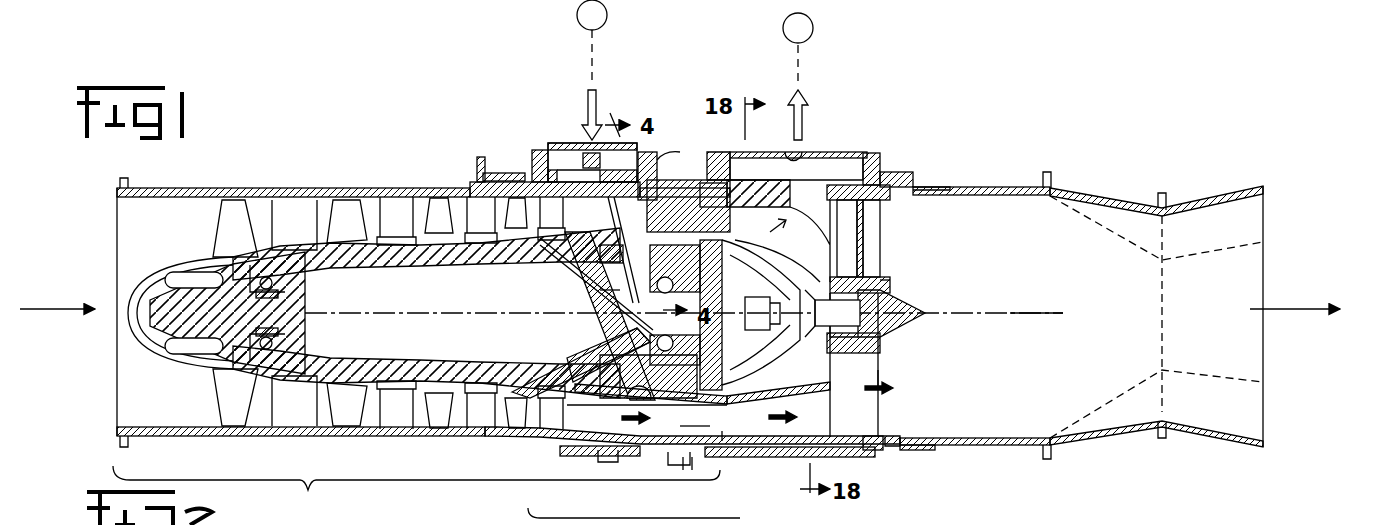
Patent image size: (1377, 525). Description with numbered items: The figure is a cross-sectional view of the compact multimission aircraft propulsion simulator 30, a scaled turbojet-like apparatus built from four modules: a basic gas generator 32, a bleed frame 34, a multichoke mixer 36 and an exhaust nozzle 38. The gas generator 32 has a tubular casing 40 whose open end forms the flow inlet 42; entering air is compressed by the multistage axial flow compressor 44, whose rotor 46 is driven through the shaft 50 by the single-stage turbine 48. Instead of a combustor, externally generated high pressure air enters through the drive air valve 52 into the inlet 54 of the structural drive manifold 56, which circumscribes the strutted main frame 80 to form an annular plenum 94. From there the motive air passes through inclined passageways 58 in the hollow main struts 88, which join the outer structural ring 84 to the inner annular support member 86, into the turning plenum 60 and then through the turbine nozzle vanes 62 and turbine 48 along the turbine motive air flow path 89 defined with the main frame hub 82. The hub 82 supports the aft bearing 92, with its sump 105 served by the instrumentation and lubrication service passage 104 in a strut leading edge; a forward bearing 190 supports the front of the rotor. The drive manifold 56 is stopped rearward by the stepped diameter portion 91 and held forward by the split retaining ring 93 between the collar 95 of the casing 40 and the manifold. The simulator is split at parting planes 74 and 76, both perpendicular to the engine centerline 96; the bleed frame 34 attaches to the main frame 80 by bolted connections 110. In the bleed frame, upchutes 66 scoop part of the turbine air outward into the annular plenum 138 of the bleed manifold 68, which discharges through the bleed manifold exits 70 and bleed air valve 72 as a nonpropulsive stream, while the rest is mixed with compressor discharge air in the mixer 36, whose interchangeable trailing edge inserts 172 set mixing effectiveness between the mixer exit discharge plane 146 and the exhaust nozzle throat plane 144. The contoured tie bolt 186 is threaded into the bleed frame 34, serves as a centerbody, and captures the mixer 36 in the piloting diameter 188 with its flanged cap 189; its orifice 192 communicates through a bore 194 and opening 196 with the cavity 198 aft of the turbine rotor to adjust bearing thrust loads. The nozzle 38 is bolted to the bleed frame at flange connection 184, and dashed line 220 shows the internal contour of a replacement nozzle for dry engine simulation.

The compact multimission aircraft propulsion simulator 30 is at (335, 160).
The basic gas generator 32 is at (416, 490).
The bleed frame 34 is at (757, 462).
The multichoke mixer 36 is at (888, 195).
The exhaust nozzle 38 is at (1112, 190).
The tubular casing 40 is at (215, 189).
The flow inlet 42 is at (117, 250).
The multistage axial flow compressor 44 is at (370, 208).
The compressor rotor 46 is at (443, 368).
The single-stage turbine 48 is at (714, 160).
The shaft 50 is at (622, 309).
The drive air valve 52 is at (577, 14).
The inlet of drive manifold 54 is at (558, 142).
The structural drive manifold 56 is at (534, 150).
The inclined passageways 58 is at (636, 194).
The turning plenum 60 is at (605, 272).
The turbine nozzle vanes 62 is at (680, 408).
The upchutes 66 is at (780, 212).
The bleed manifold 68 is at (883, 165).
The bleed manifold exits 70 is at (845, 160).
The bleed air valve 72 is at (813, 28).
The parting plane 74 is at (730, 431).
The parting plane 76 is at (832, 416).
The strutted main frame 80 is at (680, 178).
The main frame hub 82 is at (600, 345).
The outer structural ring 84 is at (692, 470).
The inner annular support member 86 is at (575, 358).
The main struts 88 is at (665, 180).
The turbine motive air flow path 89 is at (690, 425).
The main frame stepped diameter portion 91 is at (652, 450).
The bearing 92 is at (625, 330).
The split retaining ring 93 is at (480, 157).
The annular plenum 94 is at (600, 462).
The collar 95 is at (483, 176).
The engine centerline 96 is at (1038, 312).
The instrumentation and lubrication service passage 104 is at (612, 222).
The sump 105 is at (610, 292).
The bolted connections 110 is at (653, 516).
The annular plenum 138 is at (860, 165).
The exhaust nozzle throat plane 144 is at (1162, 364).
The mixer exit discharge plane 146 is at (880, 378).
The trailing edge inserts 172 is at (882, 250).
The flange connection 184 is at (910, 450).
The contoured tie bolt 186 is at (905, 332).
The piloting diameter 188 is at (892, 440).
The flanged cap 189 is at (886, 282).
The forward bearing 190 is at (322, 297).
The orifice 192 is at (880, 306).
The bore 194 is at (890, 345).
The opening 196 is at (780, 332).
The cavity 198 is at (750, 315).
The dashed line nozzle contour 220 is at (1204, 256).